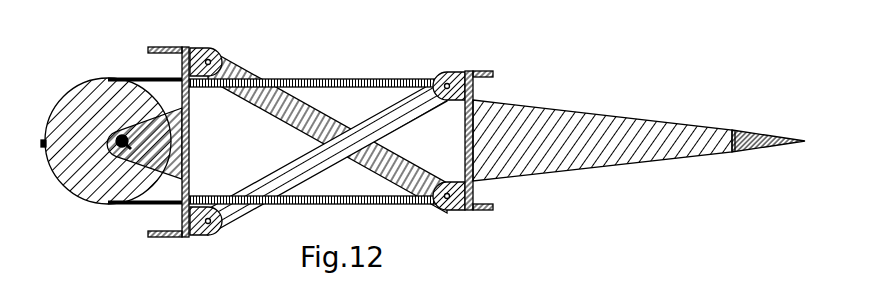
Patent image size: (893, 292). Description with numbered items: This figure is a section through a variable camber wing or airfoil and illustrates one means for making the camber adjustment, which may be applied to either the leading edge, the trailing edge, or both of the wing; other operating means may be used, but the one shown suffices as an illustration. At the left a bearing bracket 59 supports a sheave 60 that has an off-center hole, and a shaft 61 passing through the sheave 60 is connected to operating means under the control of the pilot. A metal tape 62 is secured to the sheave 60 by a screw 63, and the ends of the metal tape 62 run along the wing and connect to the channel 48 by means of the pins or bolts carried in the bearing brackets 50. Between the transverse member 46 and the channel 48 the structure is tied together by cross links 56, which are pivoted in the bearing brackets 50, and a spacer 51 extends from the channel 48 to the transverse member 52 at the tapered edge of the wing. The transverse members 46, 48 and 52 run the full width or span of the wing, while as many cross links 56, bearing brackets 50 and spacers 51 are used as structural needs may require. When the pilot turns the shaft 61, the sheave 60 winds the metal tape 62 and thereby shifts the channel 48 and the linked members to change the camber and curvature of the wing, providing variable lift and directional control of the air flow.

The transverse member 46 is at (185, 46).
The channel 48 is at (476, 72).
The bearing brackets 50 is at (198, 47).
The spacer 51 is at (590, 120).
The transverse member 52 is at (751, 133).
The cross links 56 is at (263, 182).
The bearing bracket 59 is at (170, 118).
The sheave 60 is at (113, 141).
The shaft 61 is at (138, 148).
The metal tape 62 is at (345, 80).
The screw 63 is at (40, 143).